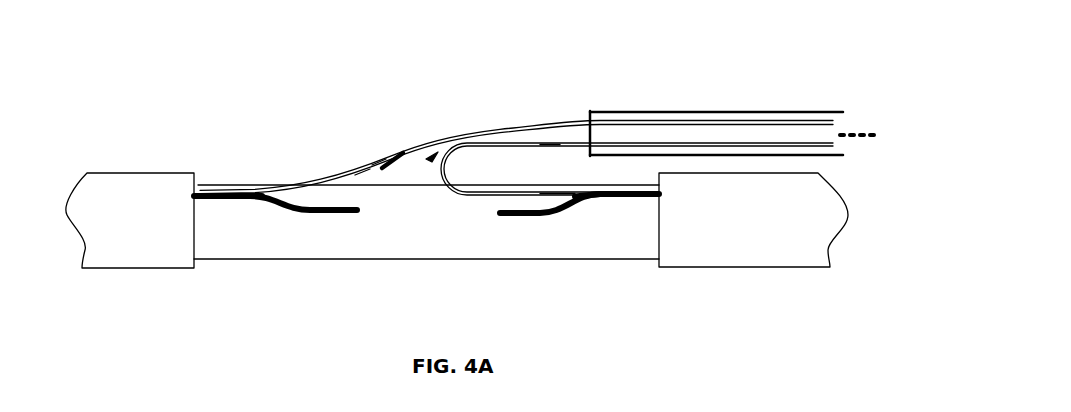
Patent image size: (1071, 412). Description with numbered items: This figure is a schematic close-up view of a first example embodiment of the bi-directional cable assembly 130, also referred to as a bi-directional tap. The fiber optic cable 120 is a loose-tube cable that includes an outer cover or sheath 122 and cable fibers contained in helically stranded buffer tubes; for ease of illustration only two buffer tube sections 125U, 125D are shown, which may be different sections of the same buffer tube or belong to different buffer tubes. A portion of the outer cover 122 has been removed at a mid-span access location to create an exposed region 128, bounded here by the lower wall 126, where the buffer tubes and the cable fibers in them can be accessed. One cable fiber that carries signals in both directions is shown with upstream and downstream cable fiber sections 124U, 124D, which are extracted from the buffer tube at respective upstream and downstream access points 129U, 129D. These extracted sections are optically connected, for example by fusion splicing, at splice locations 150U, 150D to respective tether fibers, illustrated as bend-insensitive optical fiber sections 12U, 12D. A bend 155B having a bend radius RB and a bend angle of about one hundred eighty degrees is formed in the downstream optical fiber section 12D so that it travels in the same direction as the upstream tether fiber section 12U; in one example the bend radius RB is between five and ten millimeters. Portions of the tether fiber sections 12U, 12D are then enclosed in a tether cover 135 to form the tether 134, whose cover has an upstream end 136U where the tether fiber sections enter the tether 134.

The fiber optic cable 120 is at (451, 229).
The outer cover 122 is at (112, 253).
The upstream cable fiber section 124U is at (365, 171).
The downstream cable fiber section 124D is at (583, 182).
The upstream buffer tube section 125U is at (213, 186).
The downstream buffer tube section 125D is at (510, 216).
The lower wall 126 is at (292, 260).
The exposed region 128 is at (374, 282).
The upstream access point 129U is at (245, 183).
The downstream access point 129D is at (553, 186).
The bi-directional cable assembly 130 is at (238, 86).
The tether 134 is at (635, 103).
The tether cover 135 is at (610, 112).
The upstream end 136U is at (590, 122).
The upstream splice location 150U is at (387, 163).
The downstream splice location 150D is at (556, 192).
The bend 155B is at (400, 152).
The upstream tether fiber section 12U is at (440, 138).
The downstream tether fiber section 12D is at (754, 143).
The bend radius RB is at (475, 166).